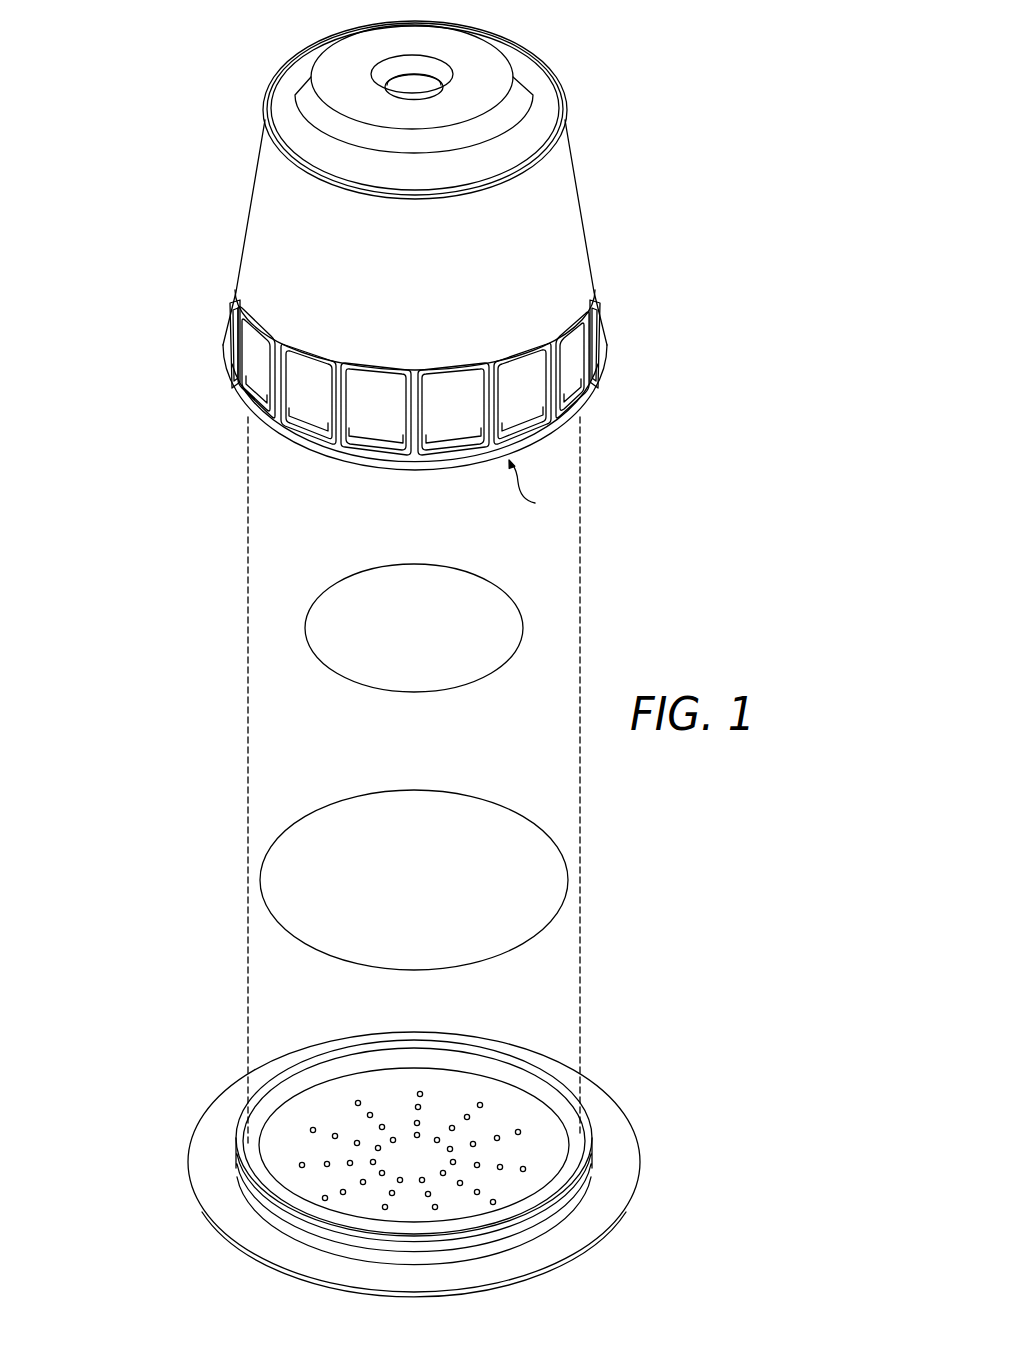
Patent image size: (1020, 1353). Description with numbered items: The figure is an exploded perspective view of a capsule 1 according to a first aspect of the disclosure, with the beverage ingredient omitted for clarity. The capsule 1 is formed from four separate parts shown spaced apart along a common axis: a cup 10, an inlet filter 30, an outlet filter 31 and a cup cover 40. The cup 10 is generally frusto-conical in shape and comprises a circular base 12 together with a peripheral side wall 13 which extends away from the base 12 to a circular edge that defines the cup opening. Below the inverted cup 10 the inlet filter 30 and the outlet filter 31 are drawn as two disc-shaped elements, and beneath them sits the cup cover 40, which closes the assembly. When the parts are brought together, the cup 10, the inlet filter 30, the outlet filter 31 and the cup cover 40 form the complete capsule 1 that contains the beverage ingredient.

The capsule 1 is at (96, 630).
The cup 10 is at (636, 170).
The circular base 12 is at (457, 44).
The peripheral side wall 13 is at (562, 218).
The inlet filter 30 is at (347, 562).
The outlet filter 31 is at (345, 788).
The cup cover 40 is at (629, 1062).